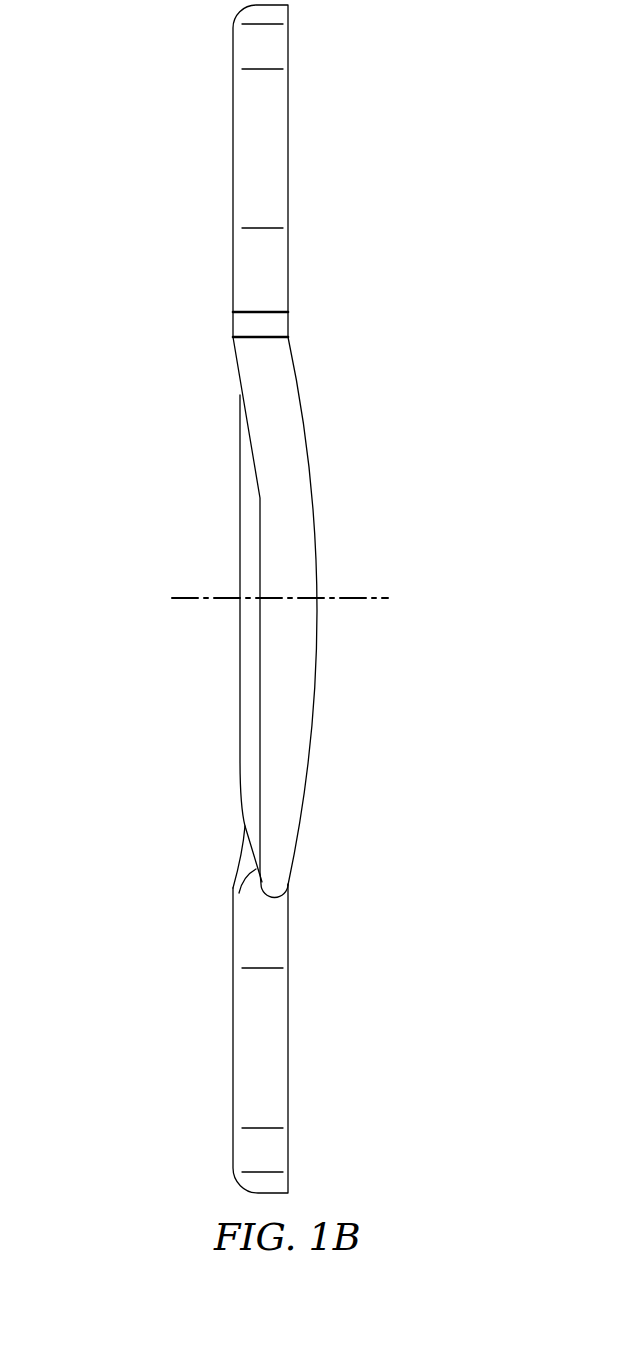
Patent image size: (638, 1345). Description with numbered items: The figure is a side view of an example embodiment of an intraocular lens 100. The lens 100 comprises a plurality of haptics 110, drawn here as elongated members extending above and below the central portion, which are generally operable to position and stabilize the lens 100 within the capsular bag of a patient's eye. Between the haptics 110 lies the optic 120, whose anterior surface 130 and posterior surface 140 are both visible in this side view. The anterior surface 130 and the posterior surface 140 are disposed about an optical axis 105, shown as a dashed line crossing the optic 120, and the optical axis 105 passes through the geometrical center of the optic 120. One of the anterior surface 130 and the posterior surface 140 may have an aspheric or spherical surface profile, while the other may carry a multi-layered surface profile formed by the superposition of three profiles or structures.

The intraocular lens 100 is at (158, 46).
The optical axis 105 is at (345, 598).
The haptics 110 is at (270, 112).
The optic 120 is at (298, 452).
The anterior surface 130 is at (240, 655).
The posterior surface 140 is at (316, 556).